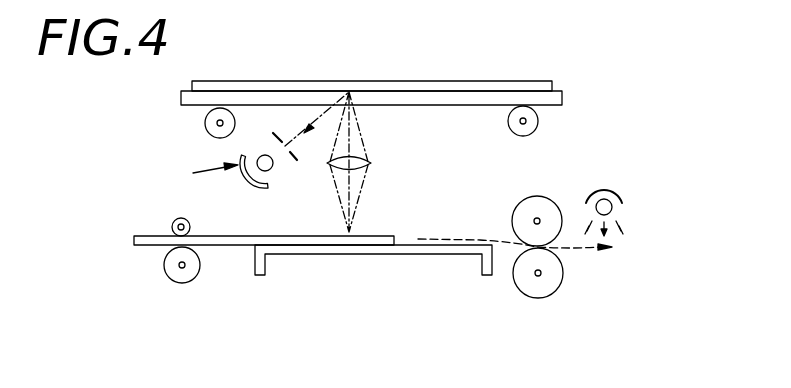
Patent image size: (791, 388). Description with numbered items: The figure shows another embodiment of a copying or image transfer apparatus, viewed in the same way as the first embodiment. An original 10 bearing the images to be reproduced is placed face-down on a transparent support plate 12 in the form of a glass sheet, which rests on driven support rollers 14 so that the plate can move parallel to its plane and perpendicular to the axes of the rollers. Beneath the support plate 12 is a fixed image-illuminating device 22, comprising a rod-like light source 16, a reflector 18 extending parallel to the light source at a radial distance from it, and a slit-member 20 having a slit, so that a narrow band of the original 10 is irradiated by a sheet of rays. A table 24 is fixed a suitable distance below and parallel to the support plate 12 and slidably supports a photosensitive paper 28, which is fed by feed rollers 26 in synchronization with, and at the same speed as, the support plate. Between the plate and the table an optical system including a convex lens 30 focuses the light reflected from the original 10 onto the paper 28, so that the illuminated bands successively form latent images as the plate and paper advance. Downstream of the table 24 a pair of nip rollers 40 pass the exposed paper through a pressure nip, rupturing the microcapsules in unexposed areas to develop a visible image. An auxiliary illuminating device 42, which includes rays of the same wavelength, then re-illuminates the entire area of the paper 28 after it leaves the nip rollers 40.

The original 10 is at (490, 88).
The transparent support plate 12 is at (560, 98).
The support rollers 14 is at (210, 123).
The light source 16 is at (270, 168).
The reflector 18 is at (260, 185).
The slit-member 20 is at (292, 162).
The image-illuminating device 22 is at (201, 172).
The table 24 is at (426, 248).
The feed rollers 26 is at (173, 223).
The photosensitive paper 28 is at (232, 246).
The convex lens 30 is at (363, 165).
The nip rollers 40 is at (552, 213).
The auxiliary illuminating device 42 is at (613, 210).